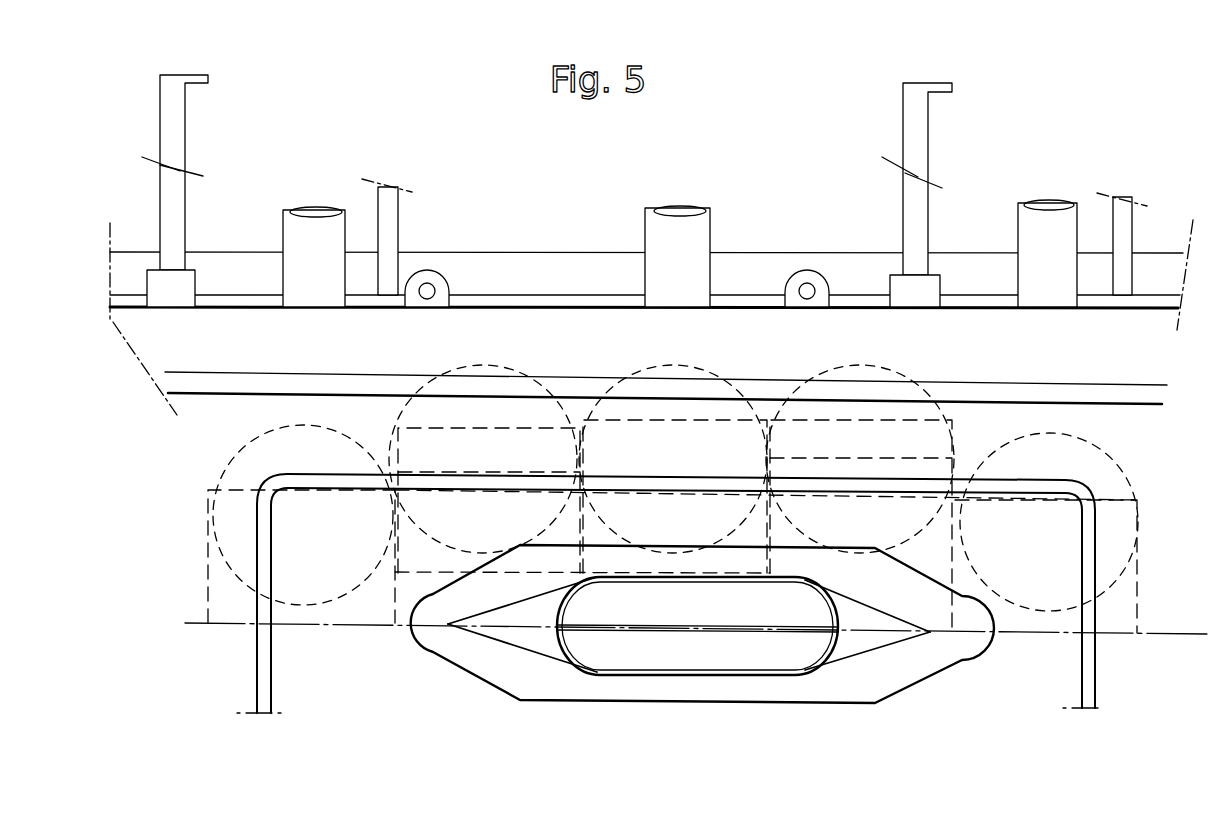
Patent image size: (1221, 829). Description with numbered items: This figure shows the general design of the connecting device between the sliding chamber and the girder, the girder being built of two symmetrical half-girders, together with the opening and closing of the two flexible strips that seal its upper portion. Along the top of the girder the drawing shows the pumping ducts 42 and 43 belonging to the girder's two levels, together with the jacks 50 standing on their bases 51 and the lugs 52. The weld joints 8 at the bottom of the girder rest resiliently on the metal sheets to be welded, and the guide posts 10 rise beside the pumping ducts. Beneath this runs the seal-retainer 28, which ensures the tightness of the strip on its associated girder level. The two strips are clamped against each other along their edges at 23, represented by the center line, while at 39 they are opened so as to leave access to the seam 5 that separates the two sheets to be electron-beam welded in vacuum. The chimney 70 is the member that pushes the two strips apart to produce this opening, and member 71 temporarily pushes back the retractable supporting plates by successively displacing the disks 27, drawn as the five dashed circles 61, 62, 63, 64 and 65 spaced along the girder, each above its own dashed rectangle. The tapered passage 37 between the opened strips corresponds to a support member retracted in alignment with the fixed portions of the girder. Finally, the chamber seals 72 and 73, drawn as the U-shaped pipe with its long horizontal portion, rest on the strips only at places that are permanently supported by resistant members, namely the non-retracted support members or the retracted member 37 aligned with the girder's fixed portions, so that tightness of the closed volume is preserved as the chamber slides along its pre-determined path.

The seam 5 is at (696, 626).
The weld joints 8 is at (507, 273).
The guide post 10 is at (390, 207).
The clamping location of strips 23 is at (335, 625).
The disks 27 is at (247, 441).
The seal-retainers 28 is at (305, 380).
The retracted support member 37 is at (510, 573).
The strip opening 39 is at (510, 640).
The pumping duct 42 is at (690, 236).
The pumping duct 43 is at (308, 233).
The jacks 50 is at (172, 113).
The base block 51 is at (170, 290).
The lugs 52 is at (812, 283).
The disk 61 is at (234, 463).
The disk 62 is at (470, 372).
The disk 63 is at (645, 372).
The disk 64 is at (822, 372).
The disk 65 is at (1135, 483).
The chimney 70 is at (580, 591).
The pushing member 71 is at (732, 548).
The chamber seal 72 is at (670, 593).
The chamber seal 73 is at (850, 487).